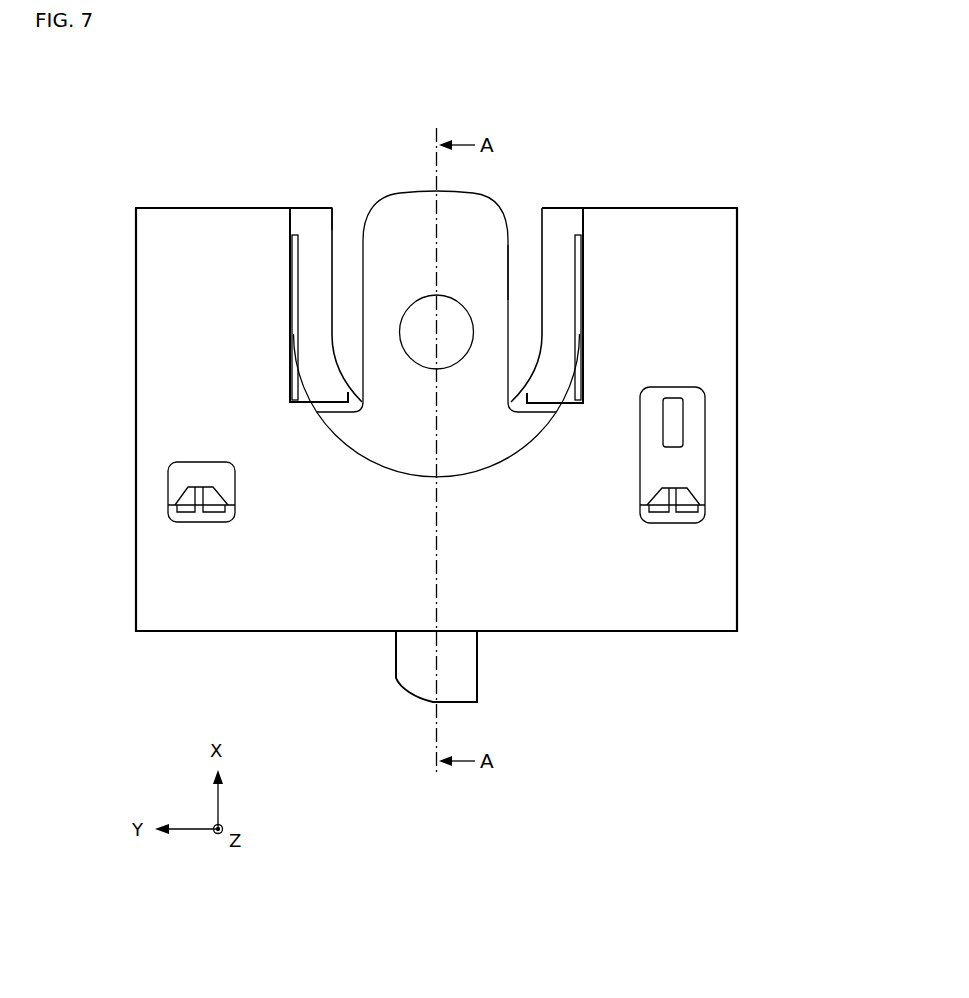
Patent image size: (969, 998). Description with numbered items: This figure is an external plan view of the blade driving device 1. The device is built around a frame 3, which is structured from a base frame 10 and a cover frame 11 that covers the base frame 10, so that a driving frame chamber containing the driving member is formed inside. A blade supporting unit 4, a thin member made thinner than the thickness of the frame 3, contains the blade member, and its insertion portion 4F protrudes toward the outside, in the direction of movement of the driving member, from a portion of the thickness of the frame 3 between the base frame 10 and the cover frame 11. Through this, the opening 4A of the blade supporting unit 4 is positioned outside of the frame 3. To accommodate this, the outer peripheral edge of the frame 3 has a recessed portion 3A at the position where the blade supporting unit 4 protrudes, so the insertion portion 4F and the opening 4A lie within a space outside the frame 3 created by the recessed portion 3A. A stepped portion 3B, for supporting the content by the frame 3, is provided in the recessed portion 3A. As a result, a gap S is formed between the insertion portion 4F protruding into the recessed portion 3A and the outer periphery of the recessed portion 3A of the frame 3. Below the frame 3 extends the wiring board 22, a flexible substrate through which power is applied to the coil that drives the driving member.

The blade driving device 1 is at (690, 125).
The frame 3 is at (738, 380).
The recessed portion 3A is at (336, 249).
The stepped portion 3B is at (317, 287).
The blade supporting unit 4 is at (547, 406).
The opening 4A is at (407, 318).
The insertion portion 4F is at (511, 275).
The base frame 10 is at (310, 206).
The cover frame 11 is at (578, 231).
The wiring board 22 is at (479, 662).
The gap S is at (529, 291).